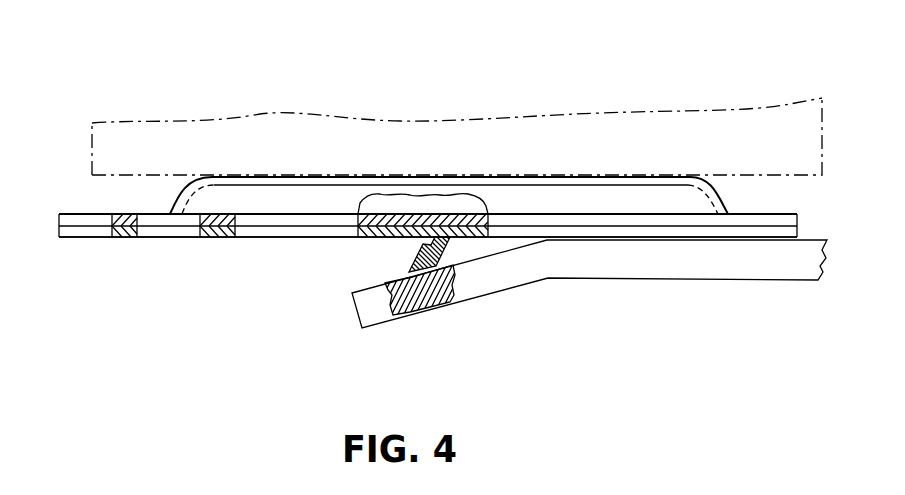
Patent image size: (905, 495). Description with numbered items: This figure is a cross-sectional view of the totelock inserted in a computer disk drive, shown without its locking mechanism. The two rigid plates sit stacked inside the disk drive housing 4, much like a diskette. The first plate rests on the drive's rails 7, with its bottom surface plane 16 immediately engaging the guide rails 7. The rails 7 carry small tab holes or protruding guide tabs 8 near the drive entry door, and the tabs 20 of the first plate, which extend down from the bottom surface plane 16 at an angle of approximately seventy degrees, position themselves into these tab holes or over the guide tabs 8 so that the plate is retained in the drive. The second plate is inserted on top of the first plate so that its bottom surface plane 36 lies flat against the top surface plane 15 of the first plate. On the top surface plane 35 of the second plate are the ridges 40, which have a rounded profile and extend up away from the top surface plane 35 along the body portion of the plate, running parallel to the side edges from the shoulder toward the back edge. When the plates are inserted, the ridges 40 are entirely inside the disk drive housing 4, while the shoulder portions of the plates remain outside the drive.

The disk drive housing 4 is at (245, 127).
The ridges 40 is at (600, 193).
The top surface plane 35 is at (80, 213).
The top surface plane 15 is at (778, 214).
The bottom surface plane 16 is at (255, 238).
The bottom surface plane 36 is at (631, 229).
The guide tabs 8 is at (410, 270).
The tabs 20 is at (445, 245).
The rails 7 is at (735, 267).